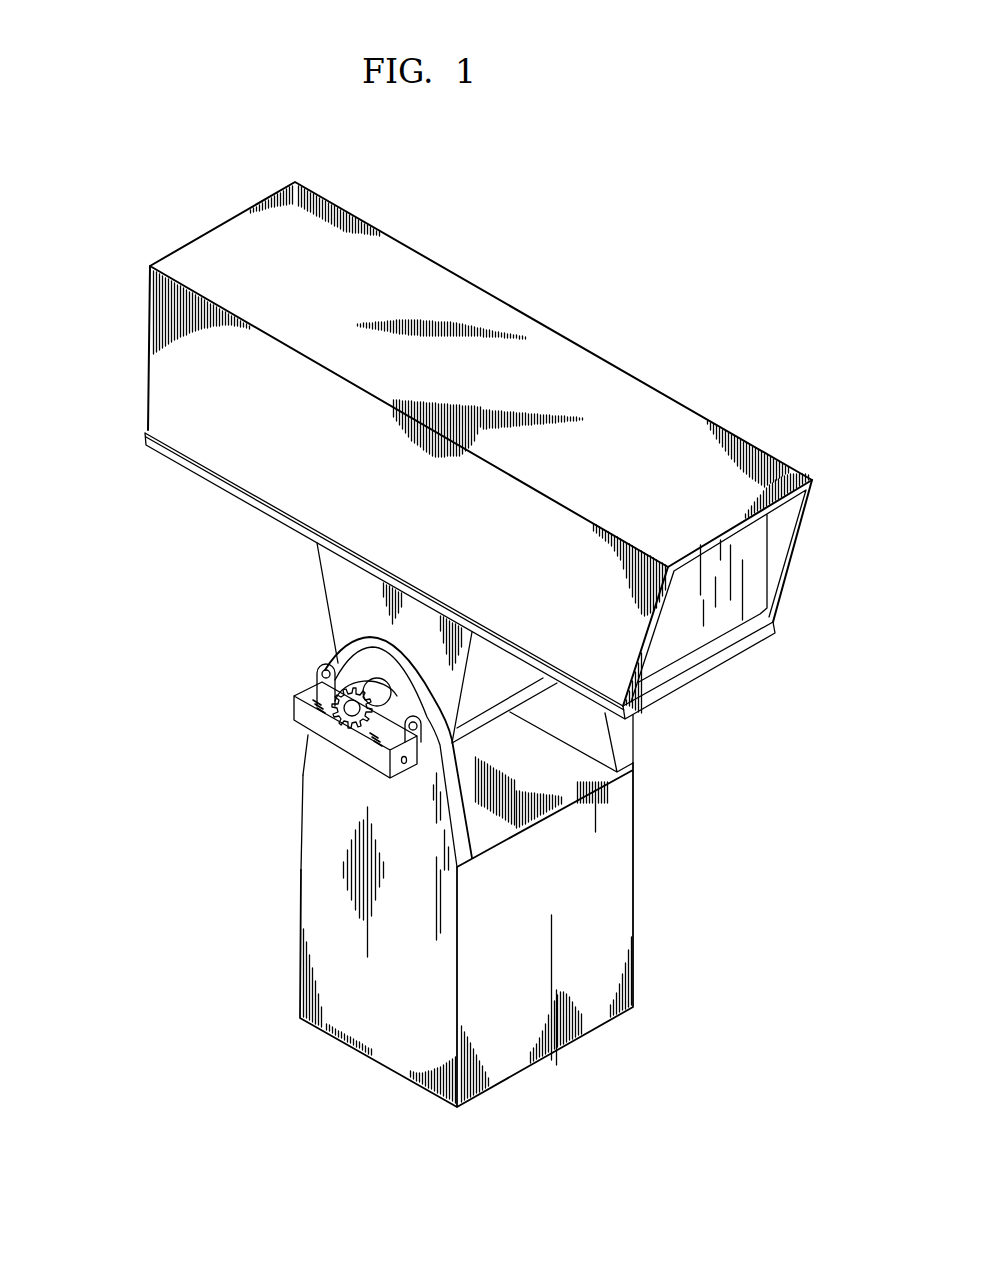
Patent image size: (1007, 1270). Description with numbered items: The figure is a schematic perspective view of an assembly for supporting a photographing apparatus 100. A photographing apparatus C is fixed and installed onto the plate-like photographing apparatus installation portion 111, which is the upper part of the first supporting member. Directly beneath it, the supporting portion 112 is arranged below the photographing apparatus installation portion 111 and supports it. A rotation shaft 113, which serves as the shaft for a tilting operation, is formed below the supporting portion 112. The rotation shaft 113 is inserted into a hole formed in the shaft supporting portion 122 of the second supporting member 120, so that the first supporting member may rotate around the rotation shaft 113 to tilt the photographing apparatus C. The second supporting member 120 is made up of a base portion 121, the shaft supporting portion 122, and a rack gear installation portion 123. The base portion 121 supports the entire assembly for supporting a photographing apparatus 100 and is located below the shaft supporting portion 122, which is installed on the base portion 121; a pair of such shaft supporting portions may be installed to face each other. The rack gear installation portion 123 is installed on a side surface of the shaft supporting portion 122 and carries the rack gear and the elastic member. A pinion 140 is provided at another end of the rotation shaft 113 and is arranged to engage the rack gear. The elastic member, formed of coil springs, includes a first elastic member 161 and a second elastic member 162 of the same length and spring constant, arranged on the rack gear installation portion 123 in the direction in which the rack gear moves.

The assembly for supporting a photographing apparatus 100 is at (119, 527).
The photographing apparatus C is at (575, 363).
The photographing apparatus installation portion 111 is at (210, 475).
The supporting portion 112 is at (345, 593).
The rotation shaft 113 is at (313, 708).
The second supporting member 120 is at (222, 740).
The base portion 121 is at (313, 840).
The shaft supporting portion 122 is at (317, 768).
The rack gear installation portion 123 is at (313, 738).
The pinion 140 is at (317, 683).
The first elastic member 161 is at (328, 698).
The second elastic member 162 is at (415, 738).